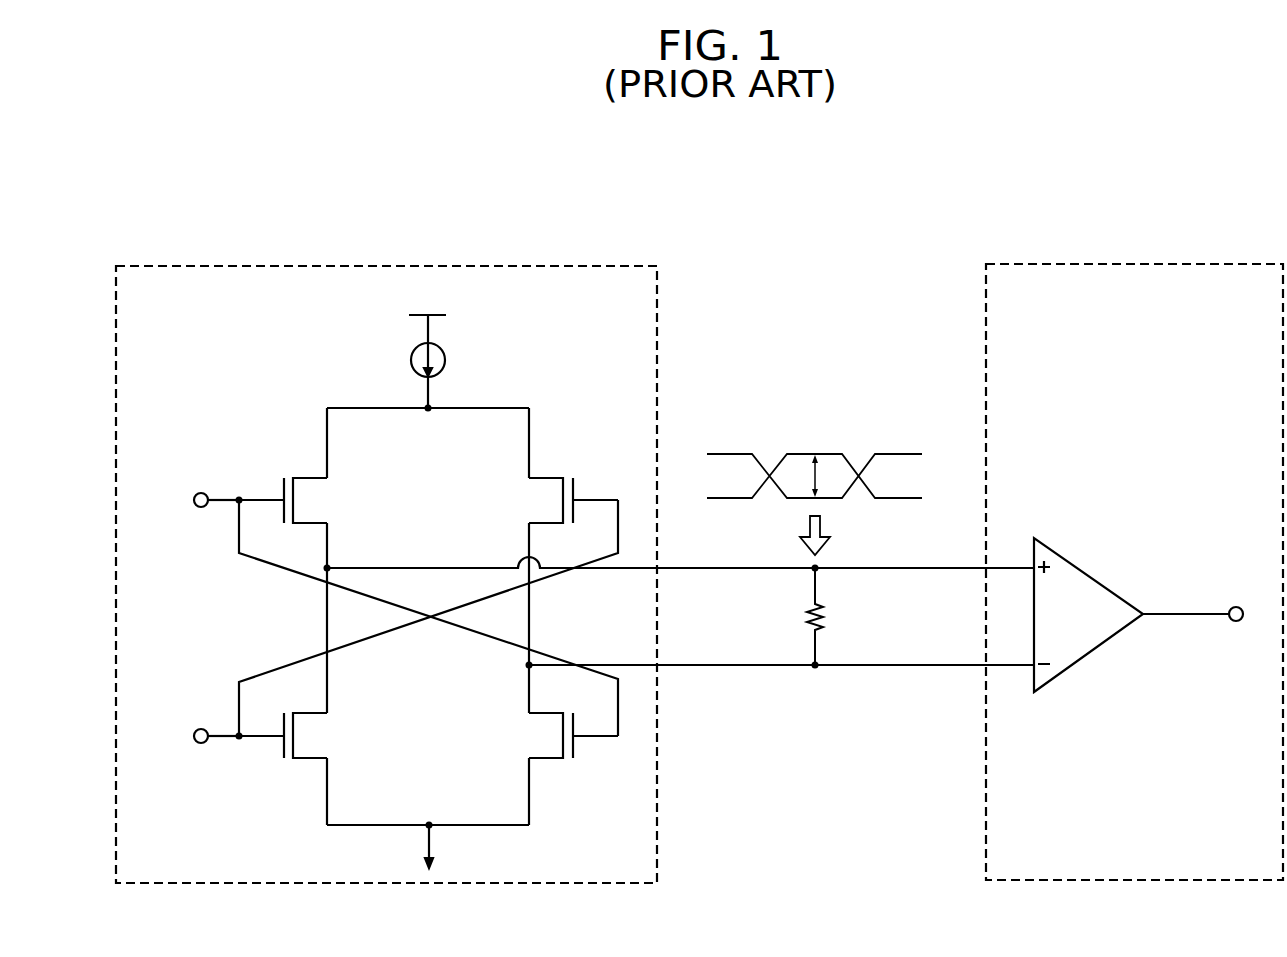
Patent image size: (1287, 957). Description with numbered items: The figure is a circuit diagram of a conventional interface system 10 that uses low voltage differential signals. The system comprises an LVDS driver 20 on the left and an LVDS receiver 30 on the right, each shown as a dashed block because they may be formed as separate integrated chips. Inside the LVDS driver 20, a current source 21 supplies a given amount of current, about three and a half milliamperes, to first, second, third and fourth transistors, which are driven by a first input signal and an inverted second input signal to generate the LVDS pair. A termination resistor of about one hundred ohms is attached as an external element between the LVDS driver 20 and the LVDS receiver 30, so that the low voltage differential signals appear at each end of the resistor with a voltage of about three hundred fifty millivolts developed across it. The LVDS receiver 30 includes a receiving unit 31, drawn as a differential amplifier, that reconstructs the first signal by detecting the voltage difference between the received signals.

The conventional interface system 10 is at (718, 189).
The LVDS driver 20 is at (657, 327).
The current source 21 is at (440, 346).
The LVDS receiver 30 is at (985, 323).
The receiving unit 31 is at (1095, 578).